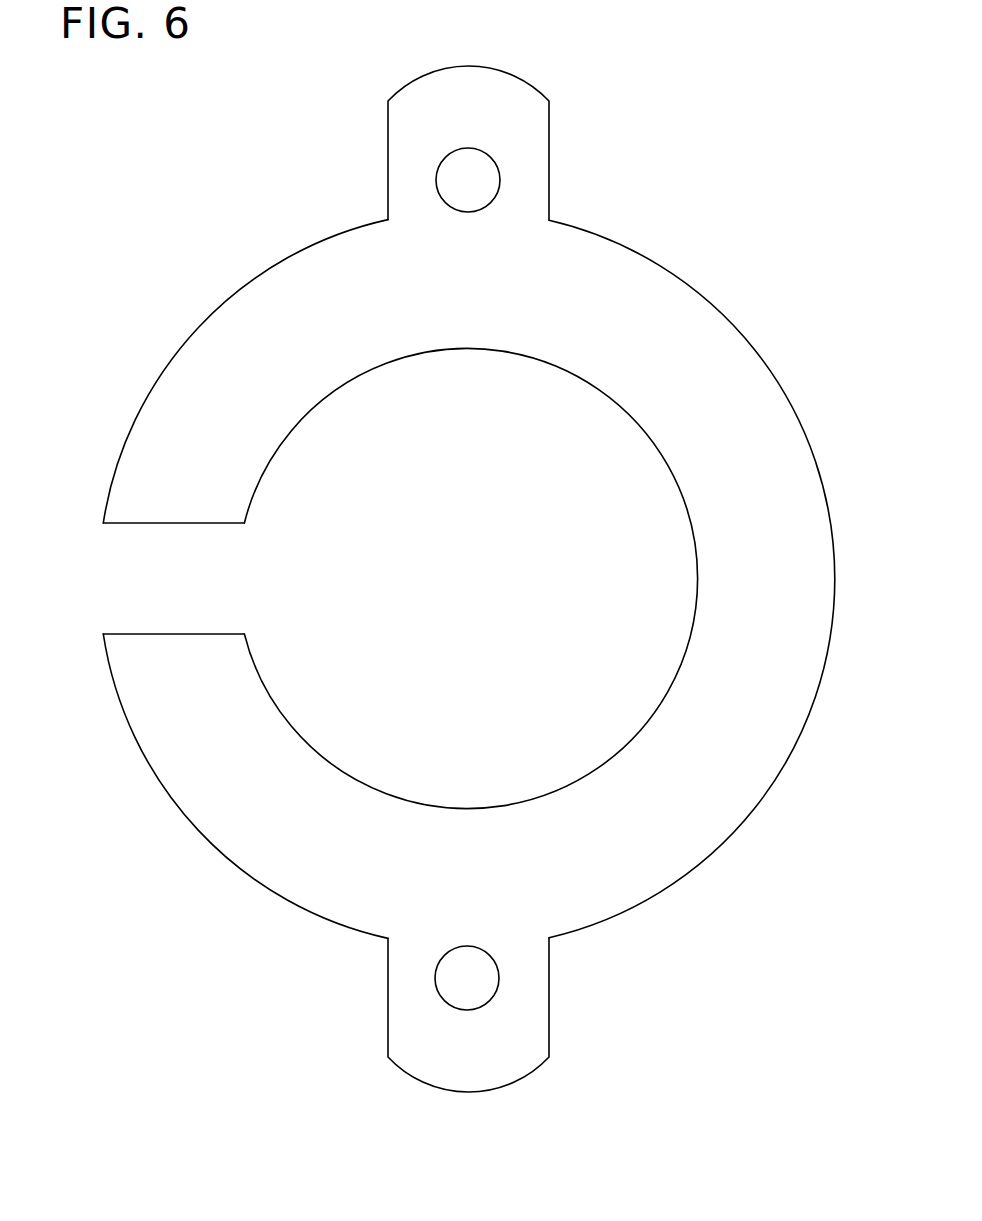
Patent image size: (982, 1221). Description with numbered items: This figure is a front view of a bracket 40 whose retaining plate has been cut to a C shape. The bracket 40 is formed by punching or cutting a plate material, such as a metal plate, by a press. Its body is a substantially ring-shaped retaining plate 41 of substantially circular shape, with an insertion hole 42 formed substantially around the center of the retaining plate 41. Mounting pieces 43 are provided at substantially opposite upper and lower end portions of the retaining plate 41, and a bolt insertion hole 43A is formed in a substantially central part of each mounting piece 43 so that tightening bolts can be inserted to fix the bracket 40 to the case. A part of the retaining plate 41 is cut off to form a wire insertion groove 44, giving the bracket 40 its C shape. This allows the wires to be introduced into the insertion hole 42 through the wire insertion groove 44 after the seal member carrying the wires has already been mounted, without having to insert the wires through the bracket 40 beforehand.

The bracket 40 is at (222, 268).
The retaining plate 41 is at (688, 336).
The insertion hole 42 is at (697, 576).
The mounting piece 43 is at (538, 166).
The bolt insertion hole 43A is at (444, 172).
The wire insertion groove 44 is at (124, 632).